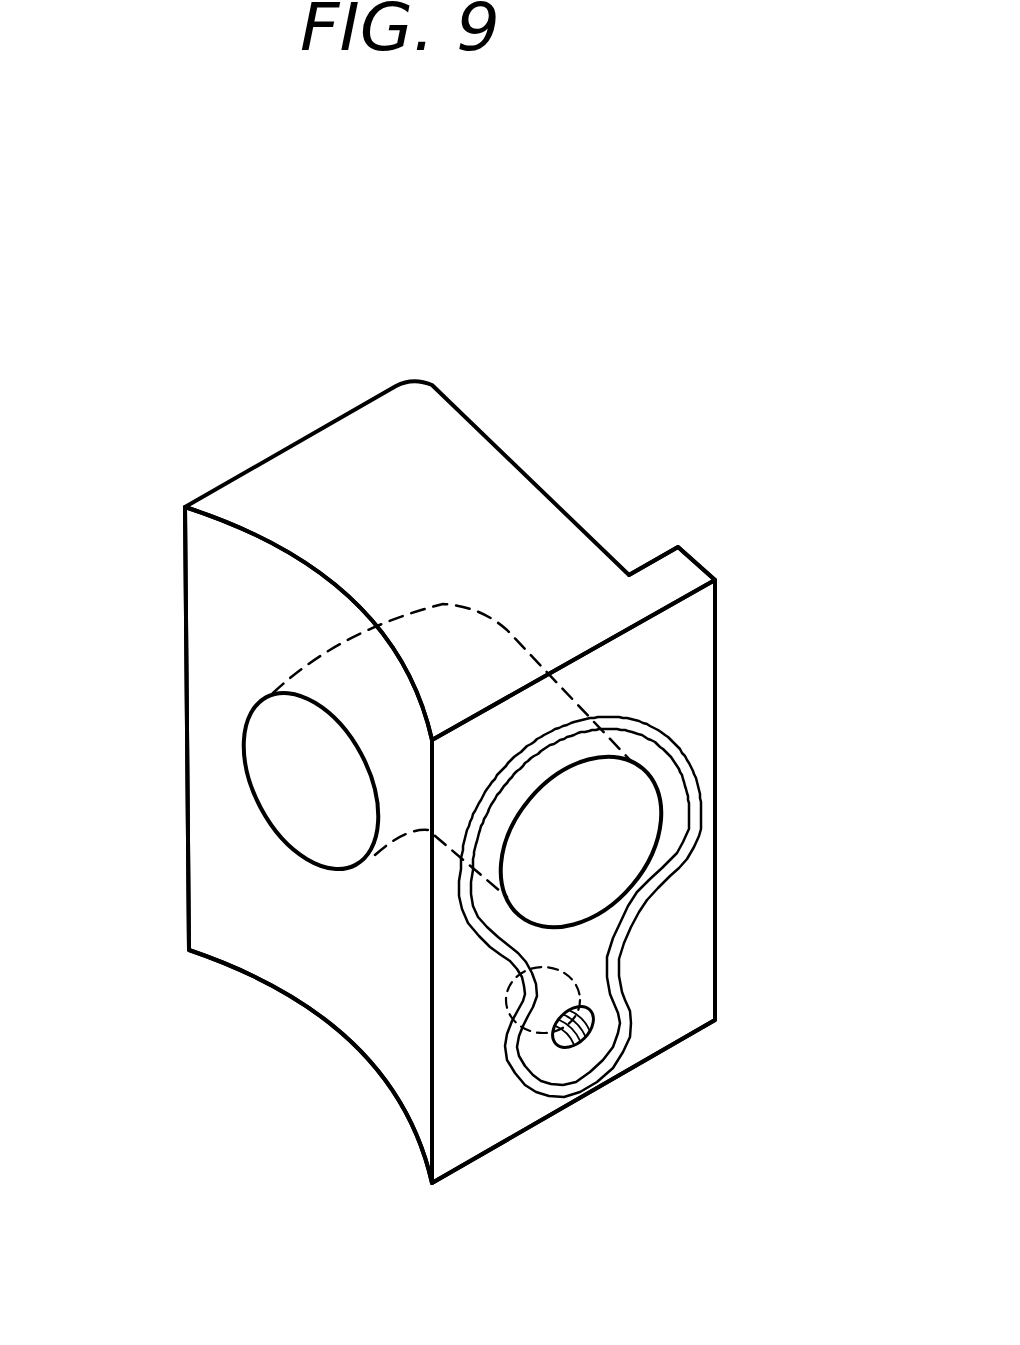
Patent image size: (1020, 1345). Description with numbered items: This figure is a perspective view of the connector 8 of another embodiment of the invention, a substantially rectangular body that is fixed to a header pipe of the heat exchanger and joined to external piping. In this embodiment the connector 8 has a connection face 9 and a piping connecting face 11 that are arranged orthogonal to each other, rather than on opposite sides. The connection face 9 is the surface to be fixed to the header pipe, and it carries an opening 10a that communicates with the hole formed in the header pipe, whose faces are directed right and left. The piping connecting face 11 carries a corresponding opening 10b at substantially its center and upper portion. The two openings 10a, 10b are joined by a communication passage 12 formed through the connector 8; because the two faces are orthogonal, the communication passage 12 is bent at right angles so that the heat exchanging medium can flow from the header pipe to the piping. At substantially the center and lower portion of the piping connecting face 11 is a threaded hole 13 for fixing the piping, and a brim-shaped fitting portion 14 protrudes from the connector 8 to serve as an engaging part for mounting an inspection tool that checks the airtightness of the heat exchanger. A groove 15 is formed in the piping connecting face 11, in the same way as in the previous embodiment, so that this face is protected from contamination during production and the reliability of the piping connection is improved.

The connector 8 is at (227, 377).
The connection face 9 is at (330, 977).
The opening 10a is at (252, 776).
The opening 10b is at (658, 812).
The piping connecting face 11 is at (663, 672).
The communication passage 12 is at (467, 652).
The threaded hole 13 is at (593, 1033).
The fitting portion 14 is at (682, 568).
The groove 15 is at (648, 902).